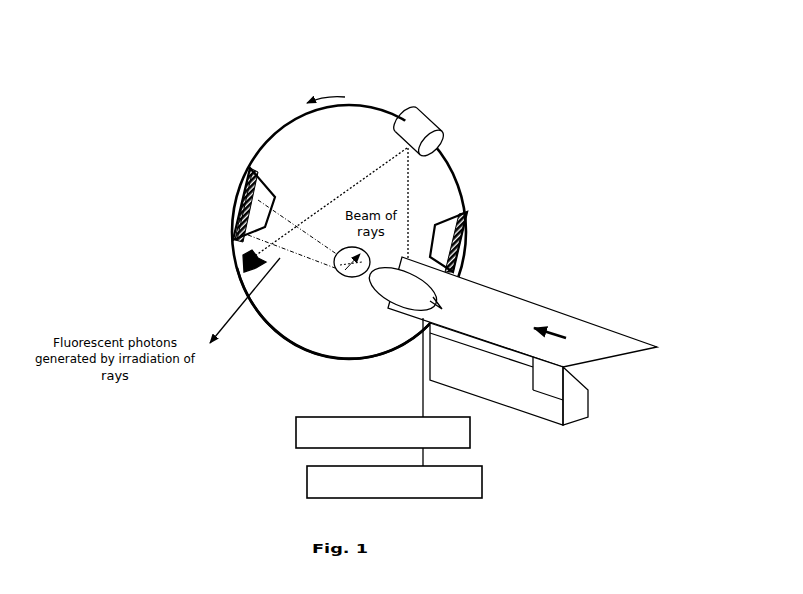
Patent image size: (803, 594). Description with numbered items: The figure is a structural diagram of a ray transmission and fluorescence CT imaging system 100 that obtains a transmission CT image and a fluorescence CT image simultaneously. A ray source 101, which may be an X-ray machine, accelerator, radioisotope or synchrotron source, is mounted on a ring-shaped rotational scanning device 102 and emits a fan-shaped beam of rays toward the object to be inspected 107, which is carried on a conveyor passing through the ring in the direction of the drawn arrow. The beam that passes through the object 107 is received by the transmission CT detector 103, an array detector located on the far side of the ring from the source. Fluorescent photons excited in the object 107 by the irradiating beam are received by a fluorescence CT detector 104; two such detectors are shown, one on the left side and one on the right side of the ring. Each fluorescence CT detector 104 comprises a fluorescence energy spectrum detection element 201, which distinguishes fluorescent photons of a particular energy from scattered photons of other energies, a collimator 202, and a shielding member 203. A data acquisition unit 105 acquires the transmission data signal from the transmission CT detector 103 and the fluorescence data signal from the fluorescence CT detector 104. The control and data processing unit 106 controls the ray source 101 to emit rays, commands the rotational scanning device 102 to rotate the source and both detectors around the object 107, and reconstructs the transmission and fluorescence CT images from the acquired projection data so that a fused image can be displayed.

The ray transmission and fluorescence CT imaging system 100 is at (506, 50).
The ray source 101 is at (410, 121).
The rotational scanning device 102 is at (340, 218).
The transmission CT detector 103 is at (308, 351).
The fluorescence CT detector 104 is at (250, 167).
The data acquisition unit 105 is at (383, 383).
The control and data processing unit 106 is at (394, 473).
The object to be inspected 107 is at (510, 341).
The fluorescence energy spectrum detection element 201 is at (256, 202).
The collimator 202 is at (237, 227).
The shielding member 203 is at (233, 253).